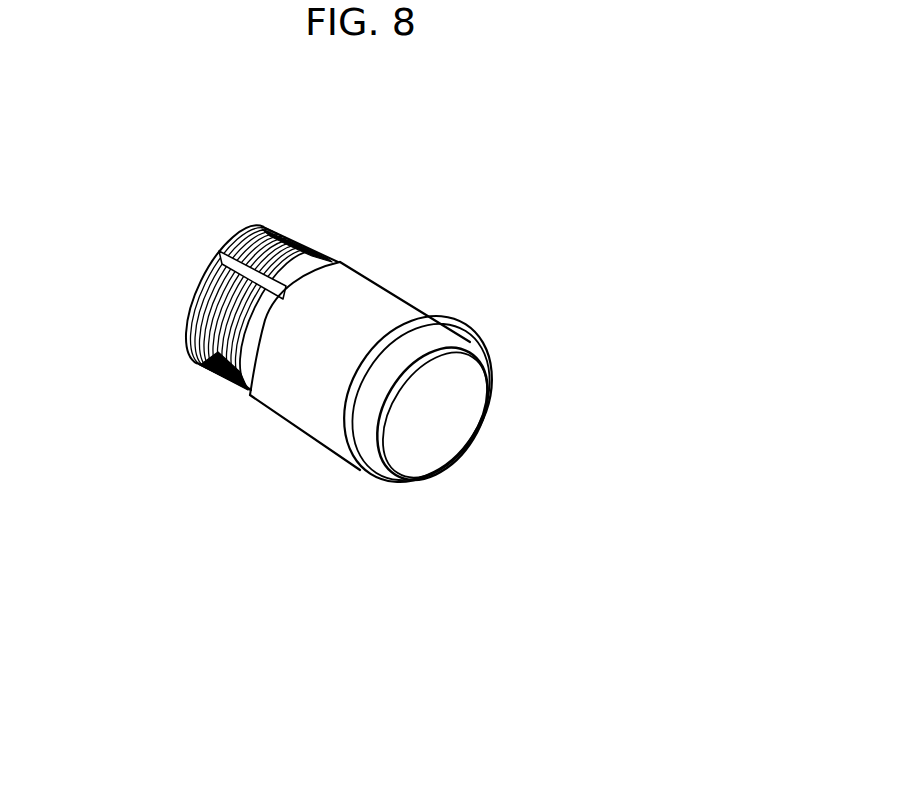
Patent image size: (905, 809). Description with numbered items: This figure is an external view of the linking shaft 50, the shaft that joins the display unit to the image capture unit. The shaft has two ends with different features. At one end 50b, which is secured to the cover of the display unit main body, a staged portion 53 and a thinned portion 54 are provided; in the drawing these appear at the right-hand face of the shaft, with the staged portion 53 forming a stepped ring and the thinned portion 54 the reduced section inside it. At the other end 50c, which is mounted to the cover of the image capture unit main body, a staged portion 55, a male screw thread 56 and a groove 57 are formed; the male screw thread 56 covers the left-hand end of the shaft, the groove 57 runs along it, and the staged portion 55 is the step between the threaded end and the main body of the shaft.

The linking shaft 50 is at (473, 203).
The one end of the linking shaft 50b is at (507, 365).
The another end of the linking shaft 50c is at (358, 257).
The staged portion 53 is at (372, 475).
The thinned portion 54 is at (407, 475).
The staged portion 55 is at (247, 343).
The male screw thread 56 is at (188, 320).
The groove 57 is at (215, 247).